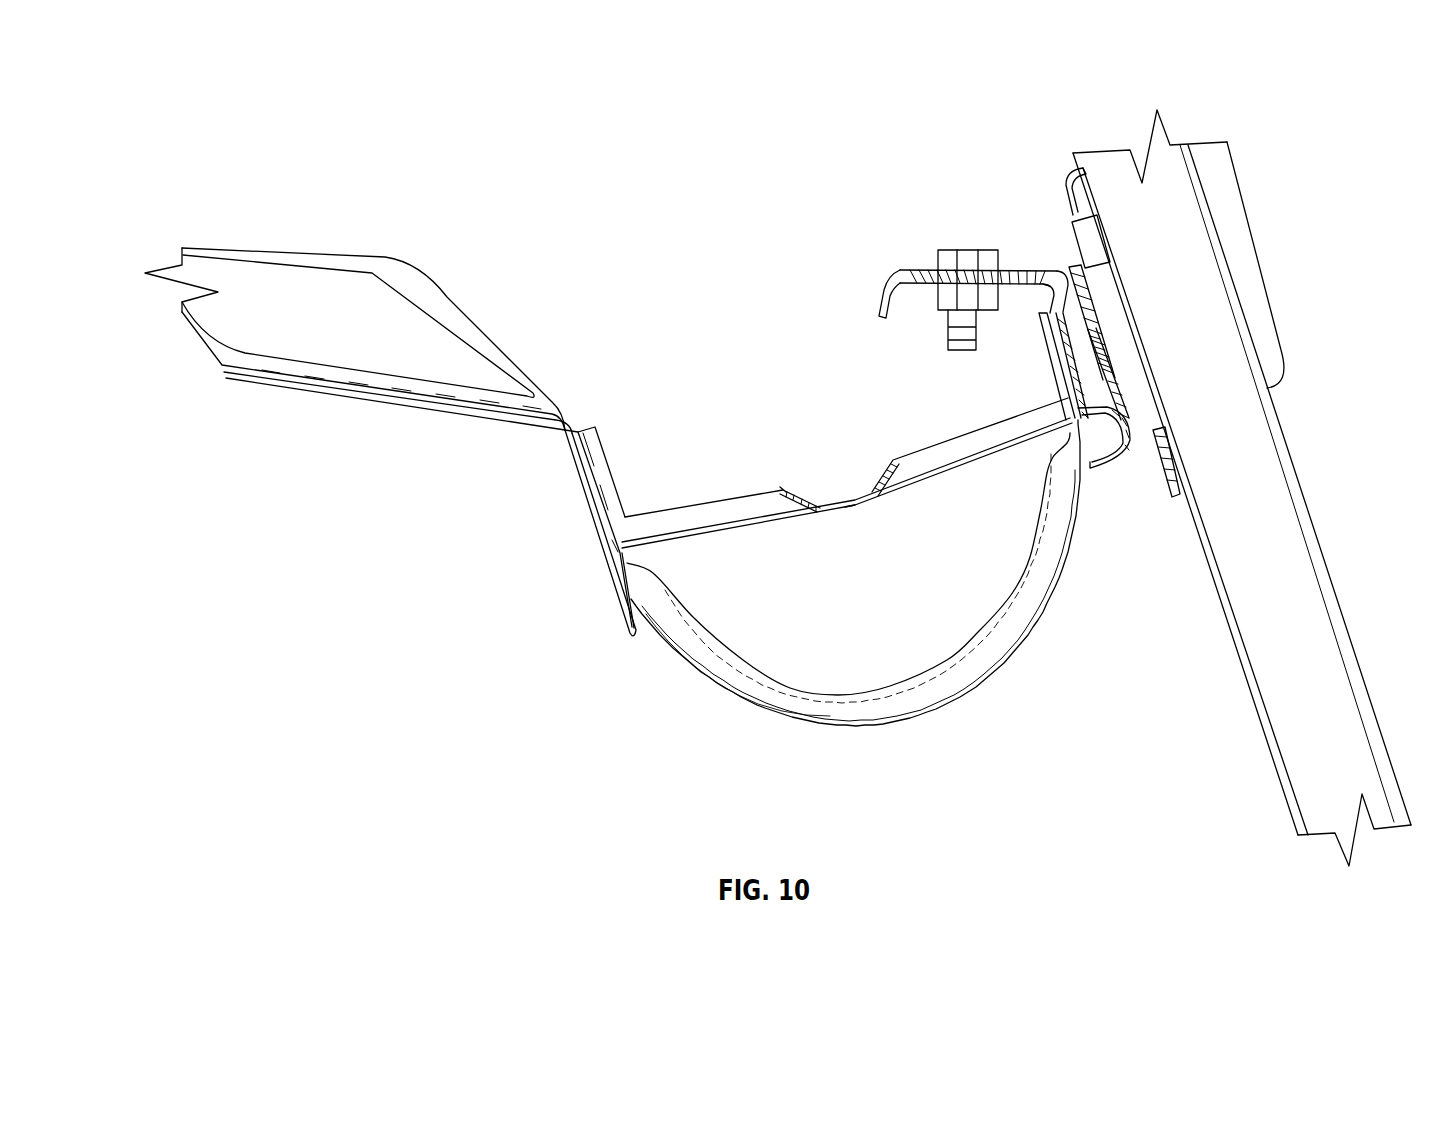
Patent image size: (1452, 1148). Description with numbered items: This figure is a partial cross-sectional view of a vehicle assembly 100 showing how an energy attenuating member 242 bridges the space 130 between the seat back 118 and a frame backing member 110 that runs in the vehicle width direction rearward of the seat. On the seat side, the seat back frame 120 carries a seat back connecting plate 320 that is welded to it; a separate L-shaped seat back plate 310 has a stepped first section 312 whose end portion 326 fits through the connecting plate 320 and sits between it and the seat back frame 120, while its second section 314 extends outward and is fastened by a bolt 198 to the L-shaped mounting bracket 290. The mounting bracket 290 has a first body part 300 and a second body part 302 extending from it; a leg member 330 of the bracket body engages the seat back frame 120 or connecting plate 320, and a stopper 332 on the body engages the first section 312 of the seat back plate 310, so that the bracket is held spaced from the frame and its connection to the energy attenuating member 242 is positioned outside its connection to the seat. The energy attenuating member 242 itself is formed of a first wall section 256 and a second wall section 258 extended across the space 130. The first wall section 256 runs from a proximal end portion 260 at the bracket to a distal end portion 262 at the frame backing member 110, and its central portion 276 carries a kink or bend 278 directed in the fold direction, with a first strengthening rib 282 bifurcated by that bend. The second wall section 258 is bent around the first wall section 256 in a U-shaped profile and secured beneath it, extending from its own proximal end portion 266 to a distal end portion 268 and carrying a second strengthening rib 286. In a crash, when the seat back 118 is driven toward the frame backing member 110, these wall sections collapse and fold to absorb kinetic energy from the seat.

The vehicle assembly 100 is at (230, 126).
The frame backing member 110 is at (383, 399).
The seat back 118 is at (1345, 620).
The seat back frame 120 is at (1237, 627).
The space 130 is at (707, 236).
The bolt 198 is at (962, 248).
The energy attenuating member 242 is at (628, 729).
The first wall section 256 is at (722, 525).
The second wall section 258 is at (857, 727).
The proximal end portion 260 is at (1050, 402).
The distal end portion 262 is at (618, 523).
The proximal end portion 266 is at (1085, 472).
The distal end portion 268 is at (632, 641).
The central portion 276 is at (805, 500).
The kink or bend 278 is at (850, 509).
The first strengthening rib 282 is at (965, 455).
The second strengthening rib 286 is at (754, 700).
The mounting bracket 290 is at (903, 287).
The first body part 300 is at (1045, 290).
The second body part 302 is at (1100, 370).
The seat back plate 310 is at (916, 268).
The first section 312 is at (1103, 302).
The second section 314 is at (1020, 268).
The seat back connecting plate 320 is at (1105, 390).
The end portion 326 is at (1105, 345).
The leg member 330 is at (1120, 445).
The stopper 332 is at (1058, 278).